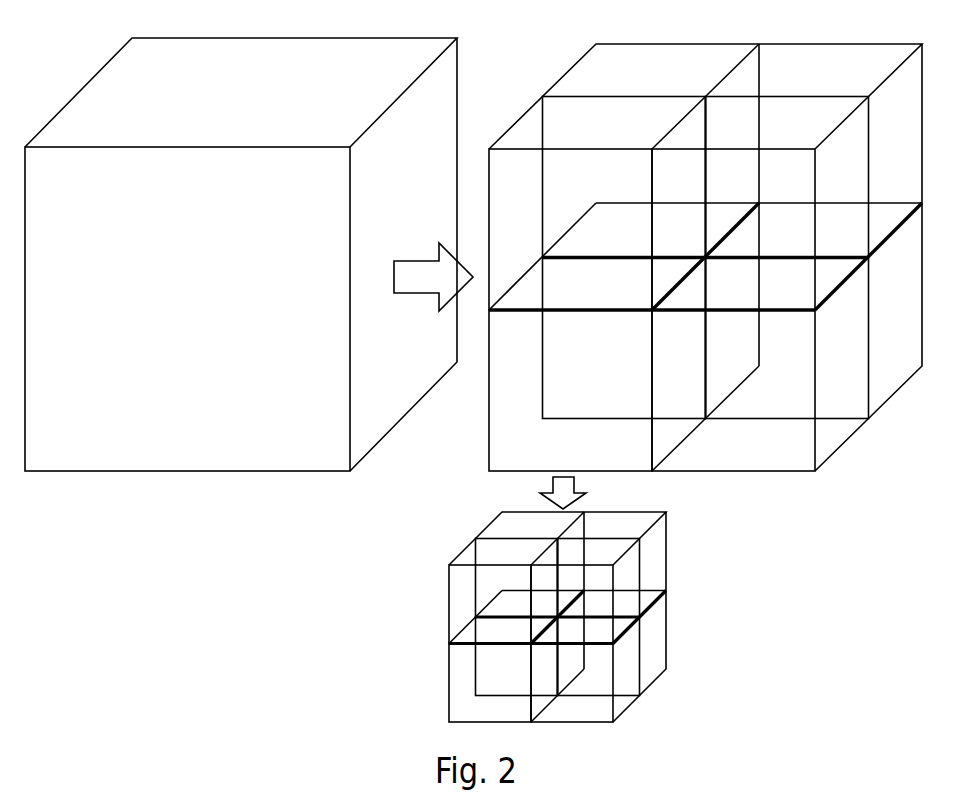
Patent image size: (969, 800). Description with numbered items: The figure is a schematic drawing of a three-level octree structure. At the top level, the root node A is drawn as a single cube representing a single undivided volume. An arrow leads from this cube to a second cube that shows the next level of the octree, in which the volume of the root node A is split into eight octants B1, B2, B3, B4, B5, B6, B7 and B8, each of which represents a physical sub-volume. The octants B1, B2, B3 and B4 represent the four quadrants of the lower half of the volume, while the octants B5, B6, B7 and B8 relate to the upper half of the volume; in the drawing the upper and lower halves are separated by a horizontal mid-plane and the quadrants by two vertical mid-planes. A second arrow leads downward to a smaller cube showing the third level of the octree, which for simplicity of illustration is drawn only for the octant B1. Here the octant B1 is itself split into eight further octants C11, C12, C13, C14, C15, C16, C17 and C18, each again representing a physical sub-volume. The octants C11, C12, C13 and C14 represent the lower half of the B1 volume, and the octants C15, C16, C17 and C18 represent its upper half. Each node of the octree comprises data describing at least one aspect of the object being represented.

The root node A is at (49, 454).
The octant B1 is at (527, 460).
The octant B2 is at (800, 458).
The octant B3 is at (587, 406).
The octant B4 is at (857, 406).
The octant B5 is at (523, 274).
The octant B6 is at (801, 284).
The octant B7 is at (575, 222).
The octant B8 is at (855, 244).
The octant C11 is at (494, 718).
The octant C12 is at (614, 718).
The octant C13 is at (519, 686).
The octant C14 is at (642, 694).
The octant C15 is at (495, 640).
The octant C16 is at (609, 640).
The octant C17 is at (522, 612).
The octant C18 is at (637, 612).